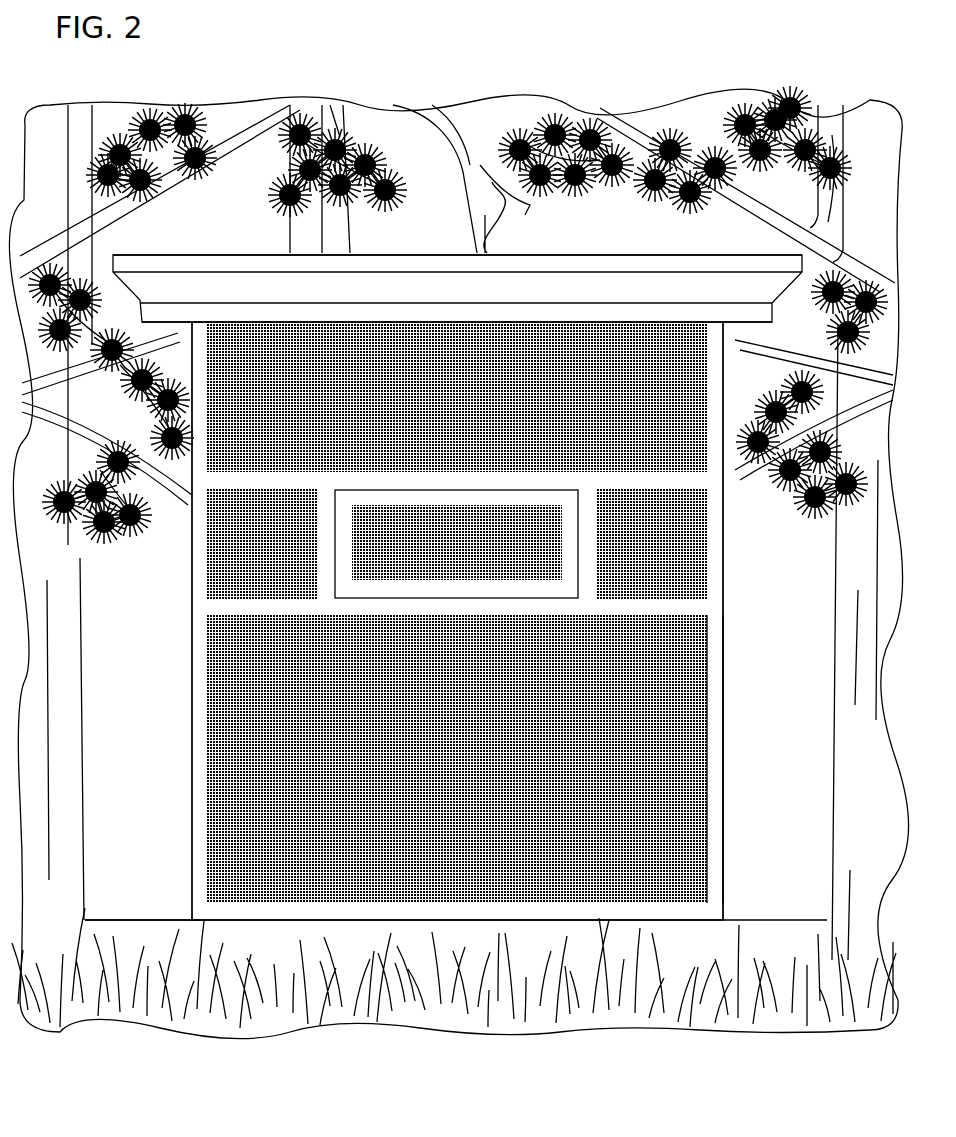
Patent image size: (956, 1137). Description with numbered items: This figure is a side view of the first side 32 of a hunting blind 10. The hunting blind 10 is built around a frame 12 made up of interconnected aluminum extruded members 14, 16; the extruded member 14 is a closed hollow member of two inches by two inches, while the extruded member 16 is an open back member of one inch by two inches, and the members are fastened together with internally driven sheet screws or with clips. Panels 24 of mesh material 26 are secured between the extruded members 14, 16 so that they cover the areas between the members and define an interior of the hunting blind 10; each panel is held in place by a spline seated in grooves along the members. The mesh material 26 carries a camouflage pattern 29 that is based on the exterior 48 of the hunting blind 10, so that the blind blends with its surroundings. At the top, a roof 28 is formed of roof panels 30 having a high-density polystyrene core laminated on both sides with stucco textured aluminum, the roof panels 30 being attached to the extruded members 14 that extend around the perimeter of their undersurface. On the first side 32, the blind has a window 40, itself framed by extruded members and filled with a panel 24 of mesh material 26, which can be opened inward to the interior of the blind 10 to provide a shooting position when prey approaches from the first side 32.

The hunting blind 10 is at (243, 236).
The frame 12 is at (183, 683).
The aluminum extruded member 14 is at (415, 316).
The aluminum extruded member 16 is at (198, 803).
The panels 24 is at (683, 337).
The mesh material 26 is at (710, 635).
The roof 28 is at (695, 250).
The camouflage pattern 29 is at (710, 700).
The roof panels 30 is at (540, 263).
The first side 32 is at (733, 773).
The window 40 is at (207, 650).
The exterior 48 is at (150, 854).